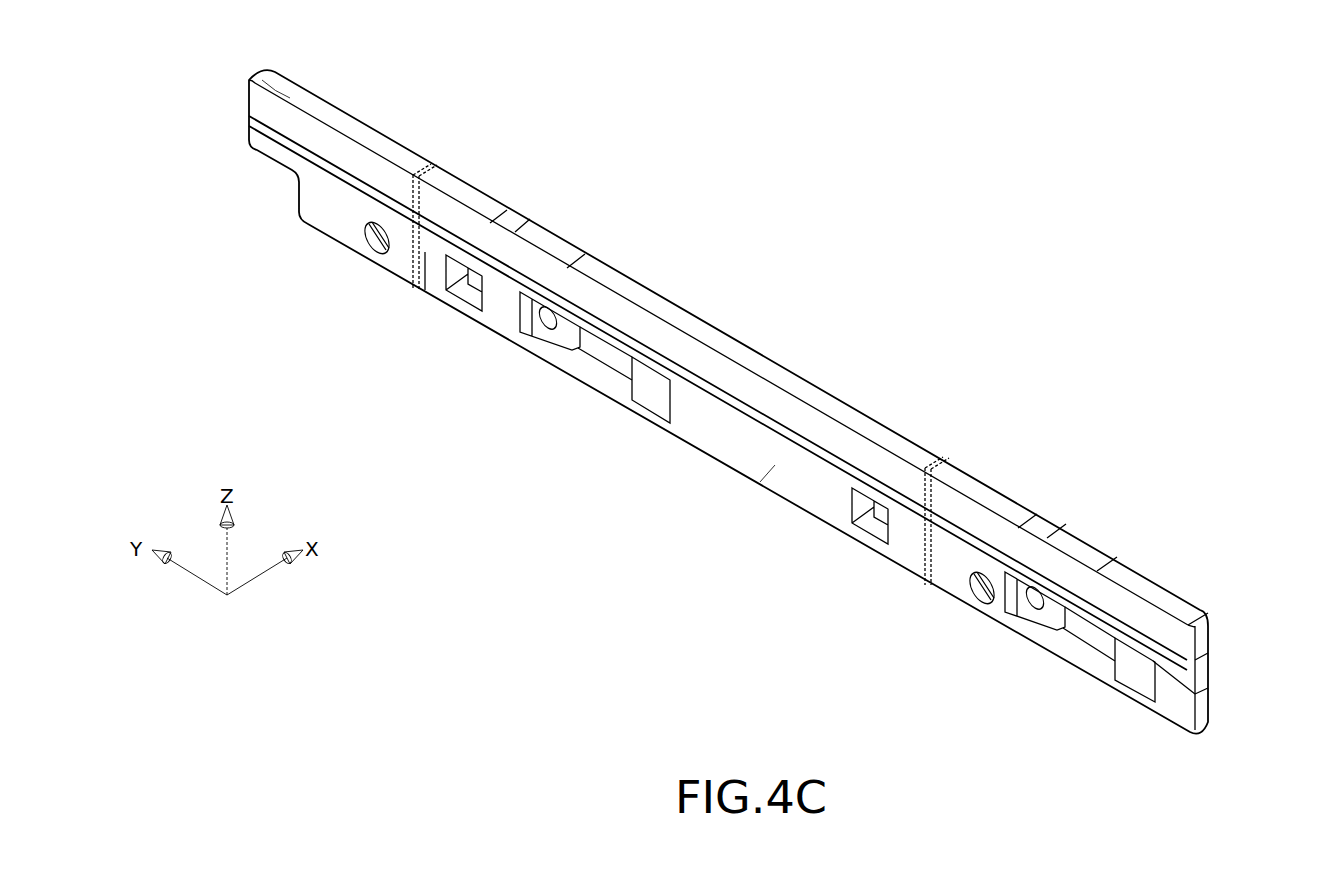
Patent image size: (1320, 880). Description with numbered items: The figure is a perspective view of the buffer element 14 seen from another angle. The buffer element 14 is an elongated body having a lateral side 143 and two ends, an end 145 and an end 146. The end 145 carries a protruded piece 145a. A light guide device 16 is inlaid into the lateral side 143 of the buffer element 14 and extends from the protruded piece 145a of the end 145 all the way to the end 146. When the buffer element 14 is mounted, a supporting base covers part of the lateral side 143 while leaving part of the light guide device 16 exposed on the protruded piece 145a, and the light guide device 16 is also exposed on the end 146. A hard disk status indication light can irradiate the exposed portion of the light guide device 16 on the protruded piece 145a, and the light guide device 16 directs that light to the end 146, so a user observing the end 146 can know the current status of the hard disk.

The buffer element 14 is at (815, 414).
The light guide device 16 is at (733, 407).
The lateral side 143 is at (778, 462).
The end 145 is at (297, 184).
The protruded piece 145a is at (272, 104).
The end 146 is at (1207, 700).